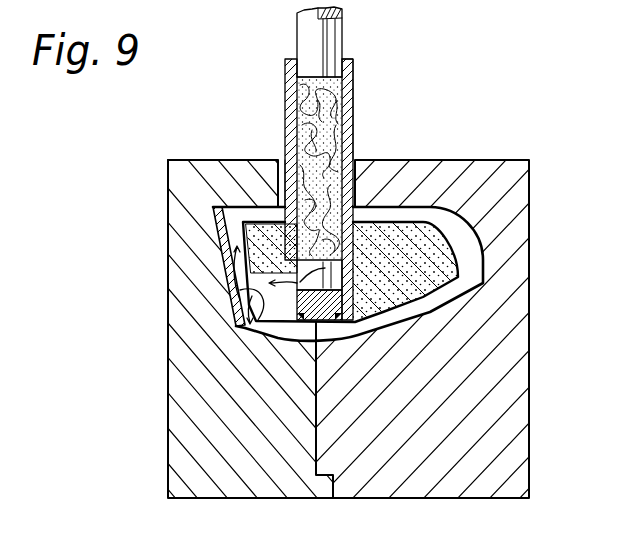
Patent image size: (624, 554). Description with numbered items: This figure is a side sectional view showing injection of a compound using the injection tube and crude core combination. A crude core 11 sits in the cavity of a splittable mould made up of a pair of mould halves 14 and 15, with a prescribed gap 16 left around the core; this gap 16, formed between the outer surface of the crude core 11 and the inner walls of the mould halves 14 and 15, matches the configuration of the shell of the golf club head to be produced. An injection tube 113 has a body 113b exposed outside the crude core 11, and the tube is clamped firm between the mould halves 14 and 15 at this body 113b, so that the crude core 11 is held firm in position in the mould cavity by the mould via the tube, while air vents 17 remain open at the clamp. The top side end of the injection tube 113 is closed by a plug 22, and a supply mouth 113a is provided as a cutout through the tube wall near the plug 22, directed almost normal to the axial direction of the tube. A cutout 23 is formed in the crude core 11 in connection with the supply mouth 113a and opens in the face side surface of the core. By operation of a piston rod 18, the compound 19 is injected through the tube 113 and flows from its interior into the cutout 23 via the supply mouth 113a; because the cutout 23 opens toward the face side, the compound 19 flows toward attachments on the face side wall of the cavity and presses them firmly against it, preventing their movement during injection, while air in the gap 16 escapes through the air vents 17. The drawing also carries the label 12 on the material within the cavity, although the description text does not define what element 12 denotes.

The crude core 11 is at (435, 258).
The release layer 12 is at (458, 280).
The mould half 14 is at (468, 475).
The mould half 15 is at (227, 481).
The gap 16 is at (420, 305).
The air vent 17 is at (283, 163).
The piston rod 18 is at (343, 30).
The compound 19 is at (353, 96).
The plug 22 is at (308, 318).
The cutout 23 is at (232, 318).
The injection tube 113 is at (285, 80).
The supply mouth 113a is at (272, 341).
The body 113b is at (353, 152).